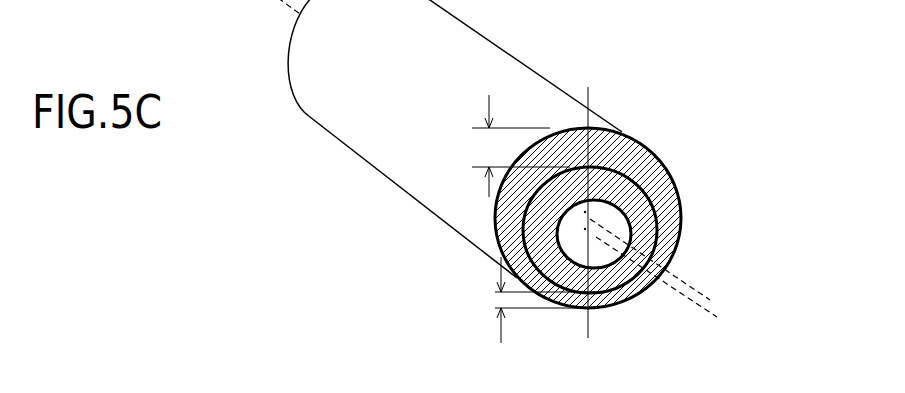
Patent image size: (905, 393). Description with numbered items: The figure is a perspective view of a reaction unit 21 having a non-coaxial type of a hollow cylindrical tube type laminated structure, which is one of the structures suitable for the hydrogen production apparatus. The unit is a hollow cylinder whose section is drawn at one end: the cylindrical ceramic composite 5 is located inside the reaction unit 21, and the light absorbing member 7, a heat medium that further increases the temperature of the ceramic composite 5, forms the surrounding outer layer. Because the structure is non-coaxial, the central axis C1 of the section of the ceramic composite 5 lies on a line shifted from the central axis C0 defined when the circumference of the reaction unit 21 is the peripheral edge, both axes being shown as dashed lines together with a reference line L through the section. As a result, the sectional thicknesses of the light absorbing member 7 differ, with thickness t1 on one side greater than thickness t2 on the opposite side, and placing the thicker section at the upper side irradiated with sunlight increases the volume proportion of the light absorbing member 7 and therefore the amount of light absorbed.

The reaction unit 21 is at (661, 218).
The light absorbing member 7 is at (658, 200).
The ceramic composite 5 is at (640, 238).
The center line L is at (592, 105).
The central axis C0 is at (700, 287).
The central axis of the ceramic composite C1 is at (700, 307).
The sectional thickness of the light absorbing member t1 is at (512, 146).
The sectional thickness of the light absorbing member t2 is at (534, 300).